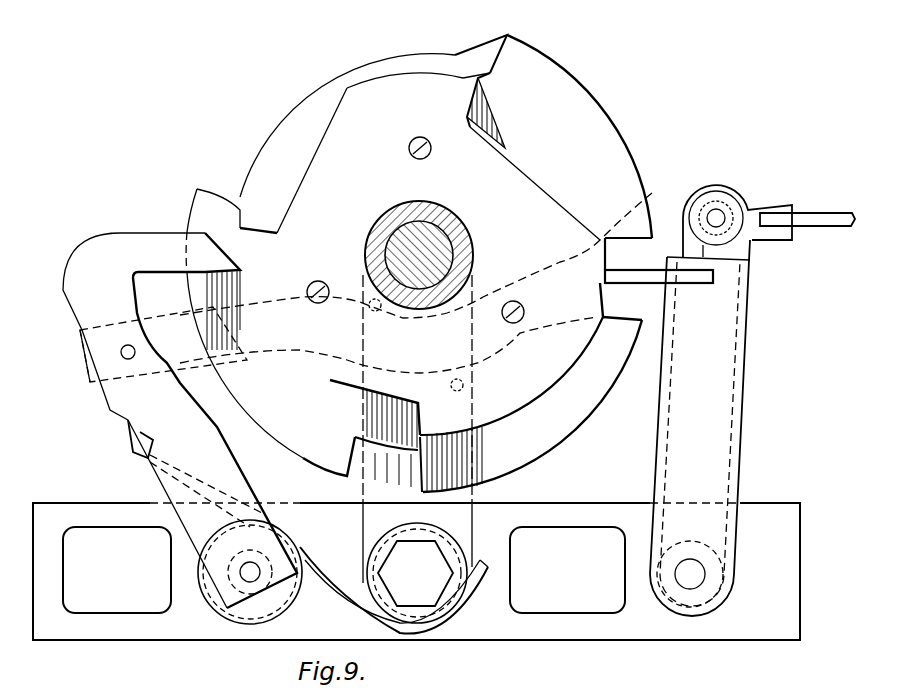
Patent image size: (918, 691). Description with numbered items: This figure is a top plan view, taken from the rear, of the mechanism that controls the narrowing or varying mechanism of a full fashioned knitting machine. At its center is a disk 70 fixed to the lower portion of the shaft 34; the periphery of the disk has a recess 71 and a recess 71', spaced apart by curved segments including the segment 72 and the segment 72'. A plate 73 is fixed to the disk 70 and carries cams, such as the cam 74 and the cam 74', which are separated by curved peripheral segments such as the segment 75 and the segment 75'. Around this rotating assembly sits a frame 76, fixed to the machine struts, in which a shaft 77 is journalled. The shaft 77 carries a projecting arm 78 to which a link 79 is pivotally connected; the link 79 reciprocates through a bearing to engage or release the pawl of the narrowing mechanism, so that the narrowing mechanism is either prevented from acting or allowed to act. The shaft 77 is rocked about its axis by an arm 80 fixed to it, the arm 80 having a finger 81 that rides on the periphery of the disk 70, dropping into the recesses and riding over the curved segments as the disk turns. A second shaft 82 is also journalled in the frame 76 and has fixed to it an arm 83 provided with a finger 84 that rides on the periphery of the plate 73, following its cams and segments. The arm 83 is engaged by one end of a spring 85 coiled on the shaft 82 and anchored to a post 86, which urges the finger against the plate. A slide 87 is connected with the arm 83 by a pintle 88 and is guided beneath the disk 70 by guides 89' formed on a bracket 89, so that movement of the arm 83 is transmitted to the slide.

The disk 70 is at (550, 135).
The peripheral recess 71 is at (489, 39).
The peripheral curved segment 72 is at (598, 67).
The plate 73 is at (323, 173).
The cam 74 is at (559, 130).
The curved peripheral segment 75 is at (351, 112).
The shaft 34 is at (460, 223).
The slide 87 is at (645, 196).
The finger 84 is at (220, 262).
The pintle 88 is at (120, 352).
The guide 89' is at (416, 267).
The finger 81 is at (650, 275).
The projecting arm 78 is at (740, 250).
The link 79 is at (830, 228).
The peripheral recess 71' is at (641, 299).
The arm 83 is at (135, 437).
The cam 74' is at (531, 410).
The peripheral curved segment 72' is at (620, 427).
The curved peripheral segment 75' is at (584, 434).
The bracket 89 is at (438, 429).
The arm 80 is at (738, 465).
The spring 85 is at (322, 572).
The post 86 is at (430, 598).
The frame 76 is at (183, 630).
The shaft 82 is at (255, 582).
The shaft 77 is at (695, 585).